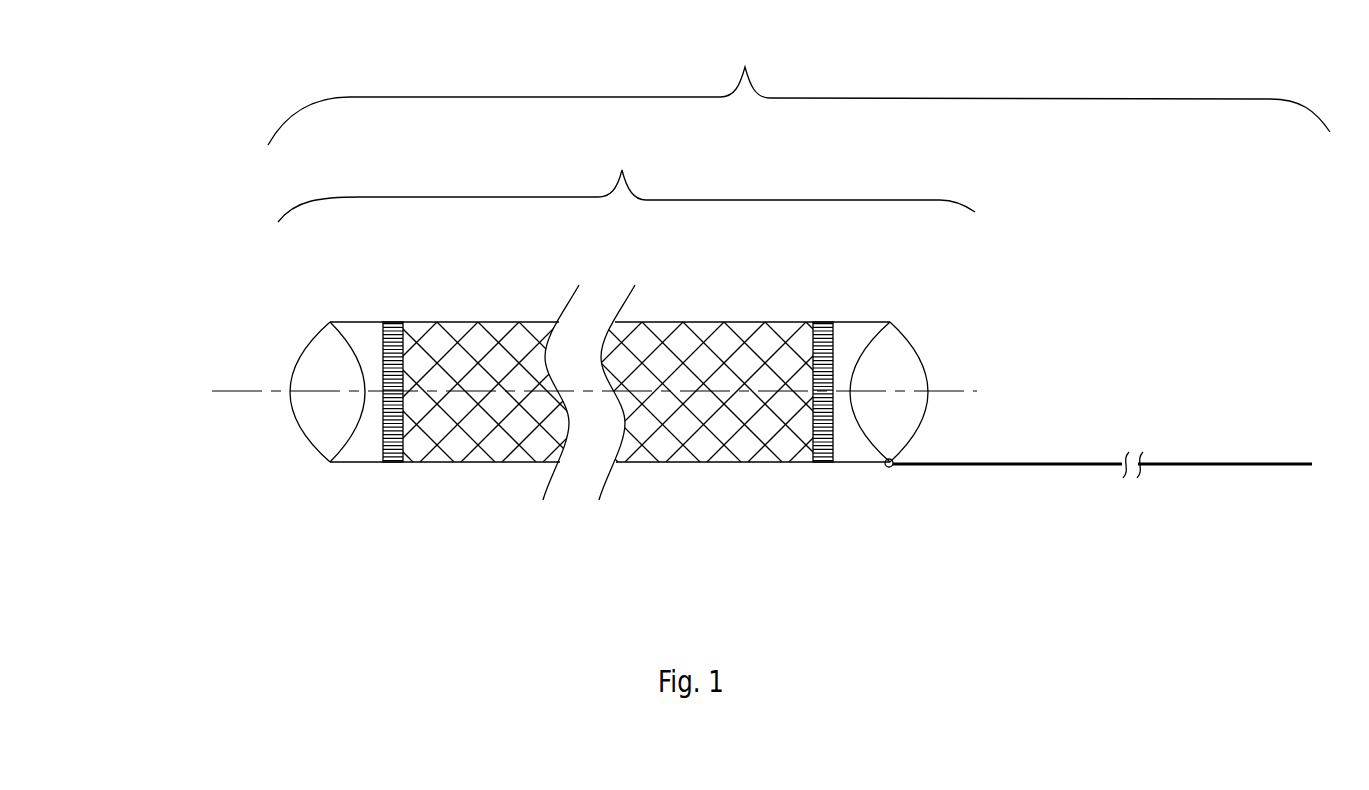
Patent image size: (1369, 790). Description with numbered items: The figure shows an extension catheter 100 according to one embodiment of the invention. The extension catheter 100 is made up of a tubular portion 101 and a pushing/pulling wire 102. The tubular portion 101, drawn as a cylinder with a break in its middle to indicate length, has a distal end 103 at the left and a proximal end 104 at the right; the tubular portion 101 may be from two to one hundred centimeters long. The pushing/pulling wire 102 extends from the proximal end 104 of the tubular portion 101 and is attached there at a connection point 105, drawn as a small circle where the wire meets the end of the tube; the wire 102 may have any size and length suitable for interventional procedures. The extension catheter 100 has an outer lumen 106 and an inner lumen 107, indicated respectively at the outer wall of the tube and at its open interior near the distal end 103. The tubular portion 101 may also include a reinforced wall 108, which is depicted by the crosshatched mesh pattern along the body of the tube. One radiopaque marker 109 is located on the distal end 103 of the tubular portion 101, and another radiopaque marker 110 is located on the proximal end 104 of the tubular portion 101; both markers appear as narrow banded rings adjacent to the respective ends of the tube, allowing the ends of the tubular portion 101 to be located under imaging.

The extension catheter 100 is at (799, 92).
The tubular portion 101 is at (626, 183).
The pushing/pulling wire 102 is at (1111, 458).
The distal end 103 is at (235, 439).
The proximal end 104 is at (960, 347).
The connection point 105 is at (948, 537).
The outer lumen 106 is at (610, 445).
The inner lumen 107 is at (265, 348).
The reinforced wall 108 is at (609, 353).
The radiopaque marker 109 is at (362, 351).
The radiopaque marker 110 is at (860, 480).